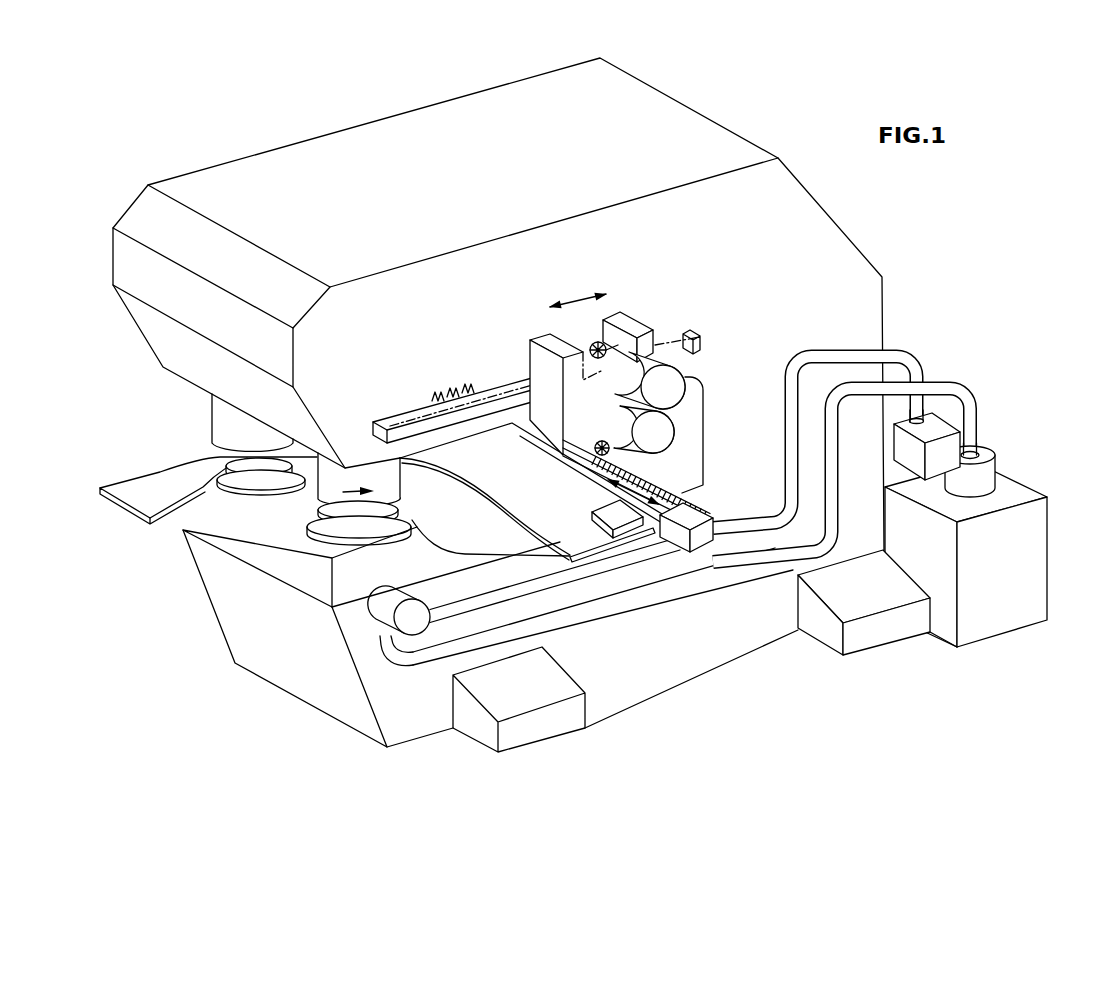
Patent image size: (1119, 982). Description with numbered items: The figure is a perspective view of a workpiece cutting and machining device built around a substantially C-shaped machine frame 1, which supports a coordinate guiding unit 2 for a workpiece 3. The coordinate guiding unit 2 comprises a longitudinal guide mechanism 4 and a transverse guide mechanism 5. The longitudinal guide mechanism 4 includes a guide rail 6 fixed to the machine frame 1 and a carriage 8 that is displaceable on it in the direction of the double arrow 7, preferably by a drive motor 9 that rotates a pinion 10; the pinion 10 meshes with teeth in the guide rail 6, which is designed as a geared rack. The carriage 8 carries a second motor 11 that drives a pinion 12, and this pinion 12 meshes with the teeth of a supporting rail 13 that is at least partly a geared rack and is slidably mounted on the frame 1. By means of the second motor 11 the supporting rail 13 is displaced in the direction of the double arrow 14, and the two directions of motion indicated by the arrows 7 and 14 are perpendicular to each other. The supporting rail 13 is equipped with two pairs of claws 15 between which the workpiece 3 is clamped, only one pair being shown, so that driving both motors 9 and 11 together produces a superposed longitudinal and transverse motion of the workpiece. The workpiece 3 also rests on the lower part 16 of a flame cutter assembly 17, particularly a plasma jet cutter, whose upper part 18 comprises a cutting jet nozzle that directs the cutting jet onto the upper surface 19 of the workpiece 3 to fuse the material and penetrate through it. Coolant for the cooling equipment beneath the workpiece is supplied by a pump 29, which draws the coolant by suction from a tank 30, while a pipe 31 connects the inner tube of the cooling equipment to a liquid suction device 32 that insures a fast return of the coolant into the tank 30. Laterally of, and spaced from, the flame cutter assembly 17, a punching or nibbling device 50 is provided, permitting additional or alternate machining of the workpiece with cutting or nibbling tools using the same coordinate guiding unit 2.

The machine frame 1 is at (328, 398).
The coordinate guiding unit 2 is at (541, 458).
The workpiece 3 is at (583, 530).
The longitudinal guide mechanism 4 is at (520, 382).
The transverse guide mechanism 5 is at (677, 533).
The guide rail 6 is at (420, 428).
The double arrow 7 is at (572, 297).
The carriage 8 is at (648, 342).
The drive motor 9 is at (663, 387).
The pinion 10 is at (602, 352).
The second motor 11 is at (653, 432).
The pinion 12 is at (598, 456).
The supporting rail 13 is at (697, 506).
The double arrow 14 is at (678, 492).
The claws 15 is at (640, 515).
The lower part 16 is at (325, 550).
The flame cutter assembly 17 is at (333, 535).
The upper part 18 is at (335, 480).
The upper surface 19 is at (146, 498).
The pump 29 is at (970, 486).
The tank 30 is at (1023, 575).
The pipe 31 is at (553, 577).
The liquid suction device 32 is at (937, 452).
The punching or nibbling device 50 is at (228, 432).